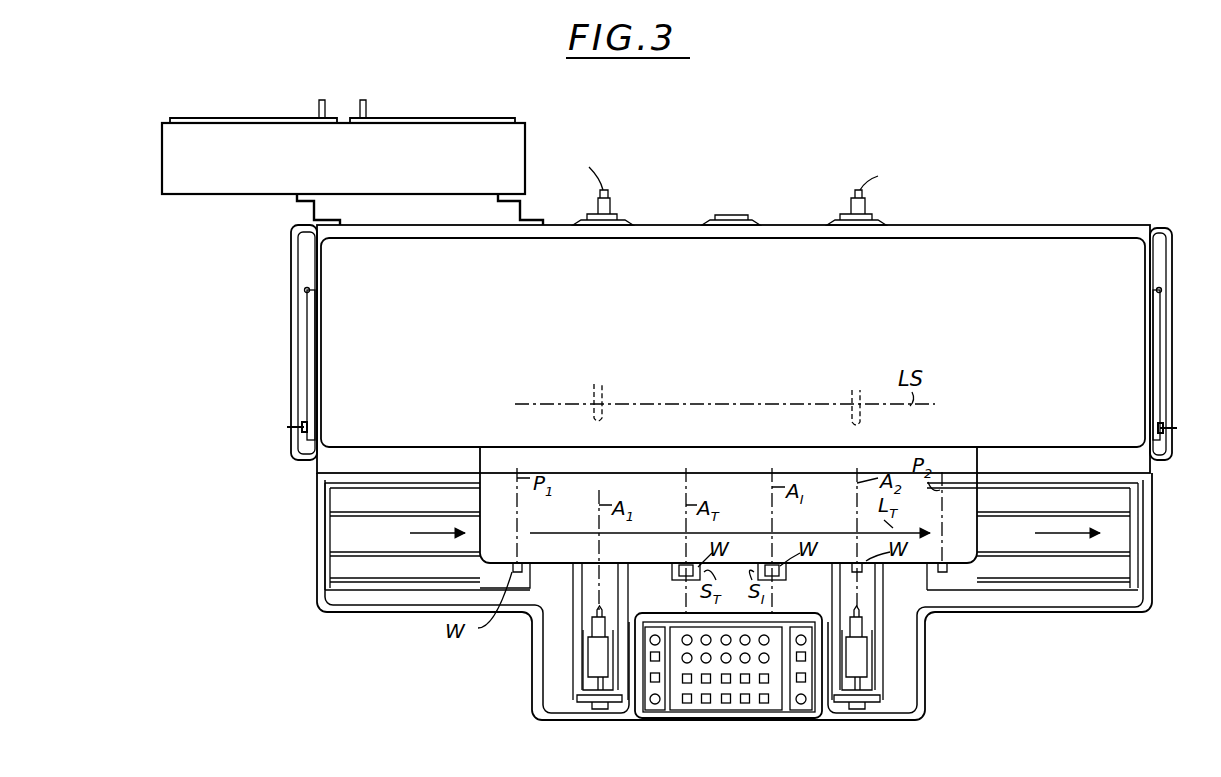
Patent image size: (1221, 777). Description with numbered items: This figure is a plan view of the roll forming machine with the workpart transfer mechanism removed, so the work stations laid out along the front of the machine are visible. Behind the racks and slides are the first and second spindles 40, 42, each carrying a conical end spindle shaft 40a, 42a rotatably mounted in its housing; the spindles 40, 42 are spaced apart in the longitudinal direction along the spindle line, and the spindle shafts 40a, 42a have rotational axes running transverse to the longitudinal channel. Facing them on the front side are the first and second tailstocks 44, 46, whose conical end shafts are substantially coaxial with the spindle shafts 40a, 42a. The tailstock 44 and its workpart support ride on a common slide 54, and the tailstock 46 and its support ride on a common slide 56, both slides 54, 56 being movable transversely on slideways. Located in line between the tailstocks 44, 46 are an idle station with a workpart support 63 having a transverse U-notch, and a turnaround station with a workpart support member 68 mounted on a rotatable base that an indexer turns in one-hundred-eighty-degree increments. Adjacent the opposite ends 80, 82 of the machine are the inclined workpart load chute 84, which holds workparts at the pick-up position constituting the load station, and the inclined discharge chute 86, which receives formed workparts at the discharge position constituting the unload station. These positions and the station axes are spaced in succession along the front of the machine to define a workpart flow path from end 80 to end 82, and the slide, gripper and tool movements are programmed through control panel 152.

The first spindle 40 is at (629, 214).
The spindle shaft 40a is at (606, 398).
The second spindle 42 is at (846, 213).
The spindle shaft 42a is at (851, 398).
The first tailstock 44 is at (588, 663).
The second tailstock 46 is at (862, 660).
The slide 54 is at (607, 590).
The slide 56 is at (845, 598).
The workpart support 63 is at (786, 572).
The workpart support member 68 is at (672, 572).
The end of the machine 80 is at (312, 573).
The end of the machine 82 is at (1160, 546).
The workpart load chute 84 is at (342, 533).
The workpart discharge chute 86 is at (1125, 501).
The control panel 152 is at (772, 697).